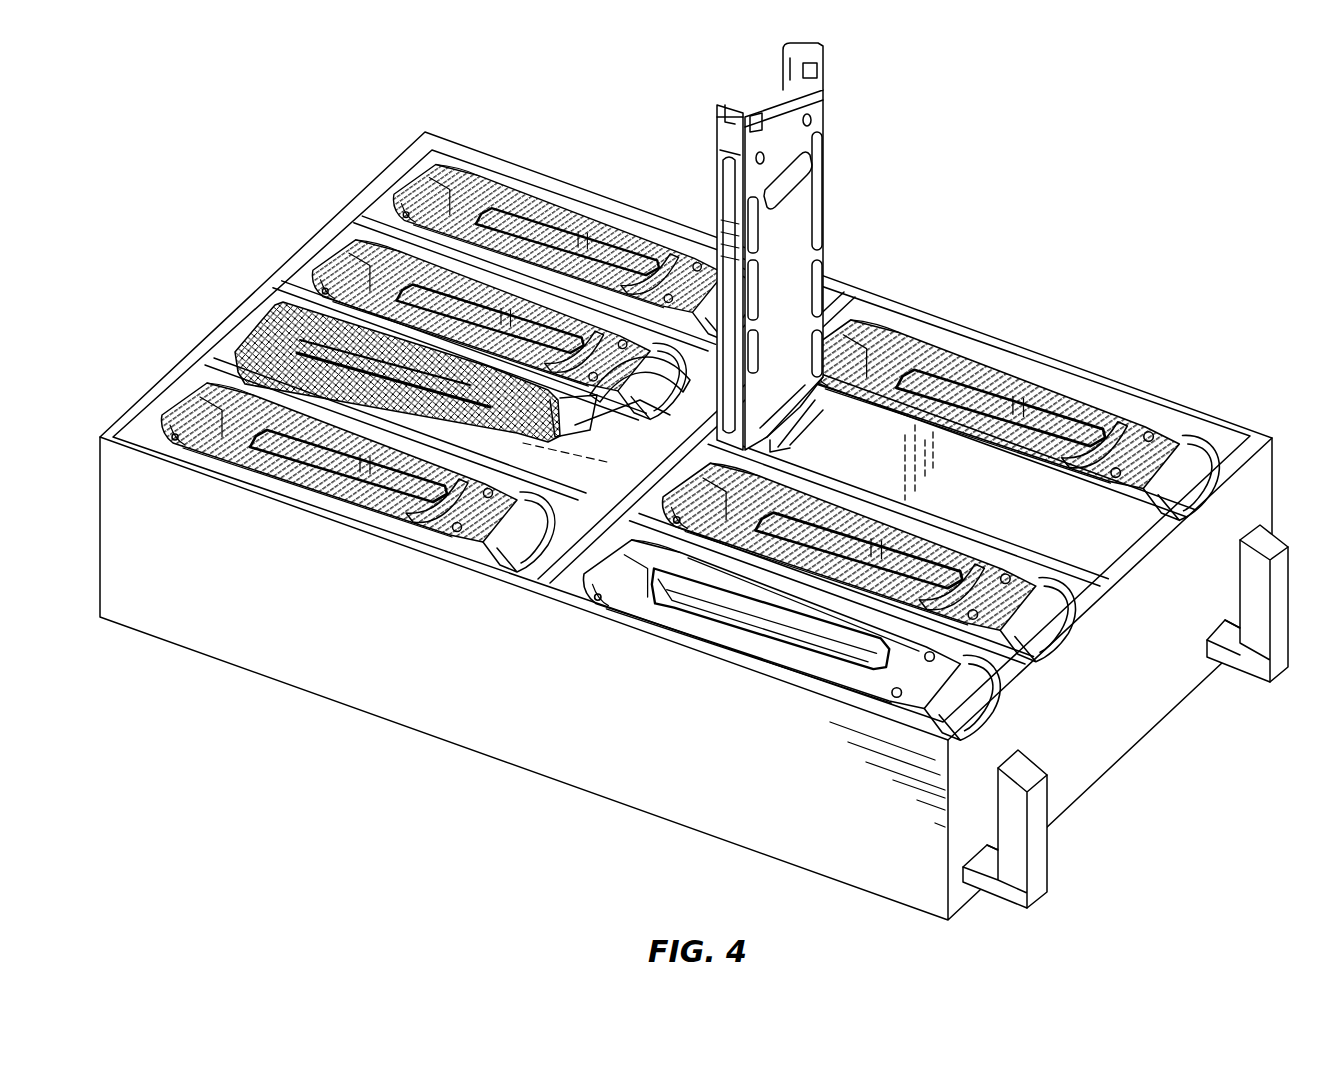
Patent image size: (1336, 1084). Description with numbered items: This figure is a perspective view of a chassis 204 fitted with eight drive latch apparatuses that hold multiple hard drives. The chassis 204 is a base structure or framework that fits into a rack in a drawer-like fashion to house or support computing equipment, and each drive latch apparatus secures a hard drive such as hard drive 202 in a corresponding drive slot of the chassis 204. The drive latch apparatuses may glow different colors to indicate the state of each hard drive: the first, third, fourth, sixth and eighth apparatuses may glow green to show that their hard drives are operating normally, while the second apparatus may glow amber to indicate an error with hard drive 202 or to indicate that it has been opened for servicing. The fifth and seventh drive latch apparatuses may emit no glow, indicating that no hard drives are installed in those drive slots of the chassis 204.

The hard drive 202 is at (497, 462).
The chassis 204 is at (282, 683).